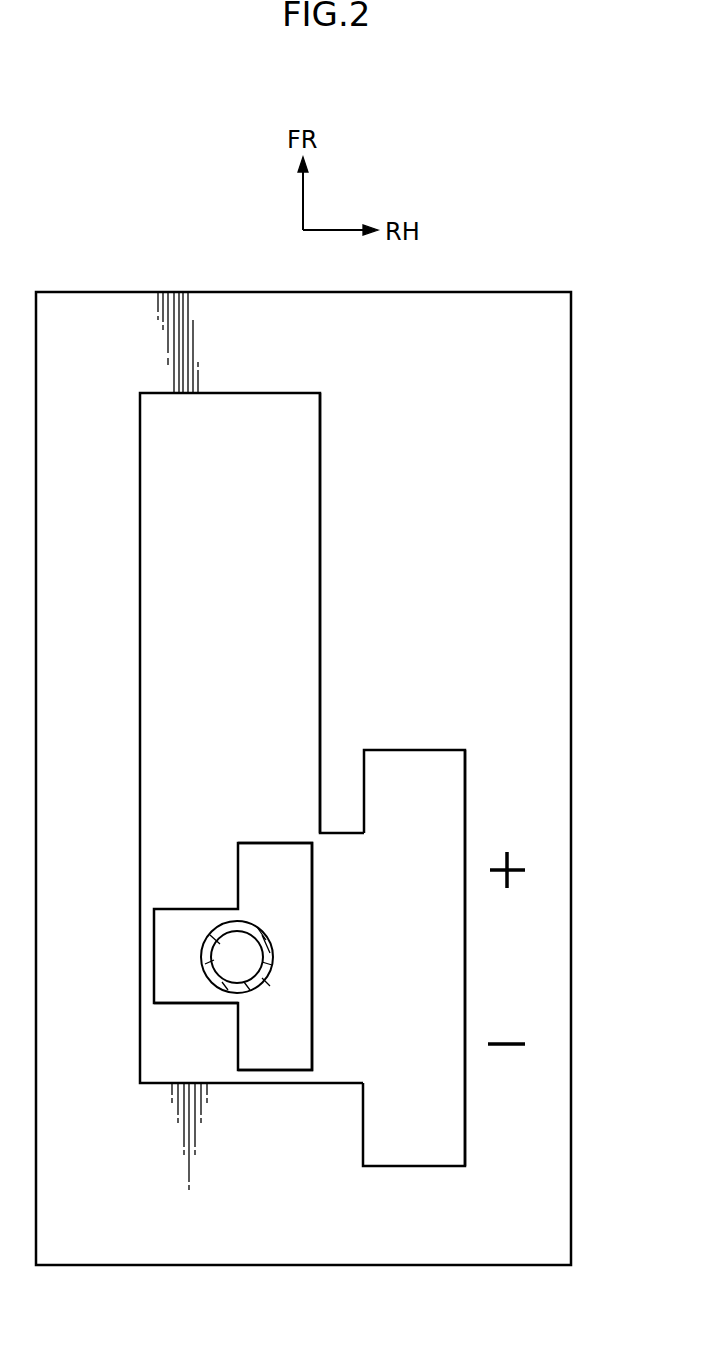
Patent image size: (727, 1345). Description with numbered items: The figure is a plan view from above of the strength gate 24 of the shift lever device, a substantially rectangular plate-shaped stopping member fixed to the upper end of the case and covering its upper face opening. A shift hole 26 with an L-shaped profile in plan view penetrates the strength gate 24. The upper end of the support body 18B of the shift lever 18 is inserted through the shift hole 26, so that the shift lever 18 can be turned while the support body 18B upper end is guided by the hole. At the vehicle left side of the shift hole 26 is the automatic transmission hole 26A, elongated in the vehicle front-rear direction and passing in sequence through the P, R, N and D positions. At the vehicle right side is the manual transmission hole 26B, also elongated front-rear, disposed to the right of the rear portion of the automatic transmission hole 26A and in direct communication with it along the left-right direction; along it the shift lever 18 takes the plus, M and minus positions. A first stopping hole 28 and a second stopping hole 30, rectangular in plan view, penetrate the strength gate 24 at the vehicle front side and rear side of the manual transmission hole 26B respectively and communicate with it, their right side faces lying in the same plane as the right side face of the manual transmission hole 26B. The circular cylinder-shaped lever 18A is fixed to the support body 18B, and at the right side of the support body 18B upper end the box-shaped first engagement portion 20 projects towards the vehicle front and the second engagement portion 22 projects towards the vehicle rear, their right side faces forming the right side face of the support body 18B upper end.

The strength gate 24 is at (130, 245).
The shift hole 26 is at (248, 393).
The automatic transmission hole 26A is at (320, 575).
The manual transmission hole 26B is at (563, 925).
The first stopping hole 28 is at (424, 750).
The second stopping hole 30 is at (424, 1166).
The shift lever 18 is at (212, 907).
The lever 18A is at (273, 955).
The support body 18B is at (195, 1003).
The first engagement portion 20 is at (312, 878).
The second engagement portion 22 is at (312, 1043).